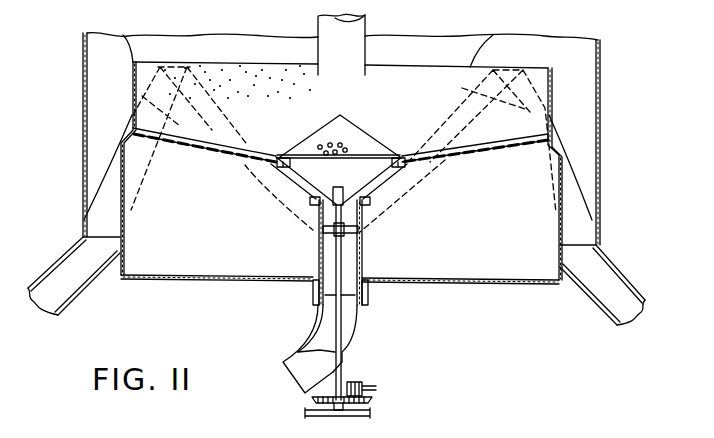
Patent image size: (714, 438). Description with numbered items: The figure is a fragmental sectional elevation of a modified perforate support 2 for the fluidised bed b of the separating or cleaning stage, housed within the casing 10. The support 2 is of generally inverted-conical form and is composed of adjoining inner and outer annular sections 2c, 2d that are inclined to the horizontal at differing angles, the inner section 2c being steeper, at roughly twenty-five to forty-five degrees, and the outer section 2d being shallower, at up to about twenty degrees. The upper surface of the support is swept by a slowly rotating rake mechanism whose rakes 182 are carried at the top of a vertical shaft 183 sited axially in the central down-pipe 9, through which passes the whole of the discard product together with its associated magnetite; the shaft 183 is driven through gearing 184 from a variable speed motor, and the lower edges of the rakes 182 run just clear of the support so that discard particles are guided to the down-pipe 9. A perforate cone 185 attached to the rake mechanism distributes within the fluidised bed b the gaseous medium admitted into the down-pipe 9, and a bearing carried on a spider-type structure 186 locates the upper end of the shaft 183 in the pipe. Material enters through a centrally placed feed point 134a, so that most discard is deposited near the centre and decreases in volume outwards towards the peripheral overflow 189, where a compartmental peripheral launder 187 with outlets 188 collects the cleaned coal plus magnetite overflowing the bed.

The housing / casing 10 is at (601, 62).
The feed point 134a is at (365, 28).
The fluidised bed b is at (251, 66).
The peripheral overflow 189 is at (126, 31).
The compartmental peripheral launder 187 is at (581, 112).
The perforate cone 185 is at (353, 128).
The perforate support 2 is at (211, 150).
The outer annular section 2d is at (490, 153).
The inner annular section 2c is at (379, 175).
The rakes 182 is at (251, 168).
The spider-type structure 186 is at (330, 237).
The vertical shaft 183 is at (341, 325).
The down-pipe 9 is at (300, 347).
The gearing 184 is at (357, 413).
The outlets 188 is at (60, 262).